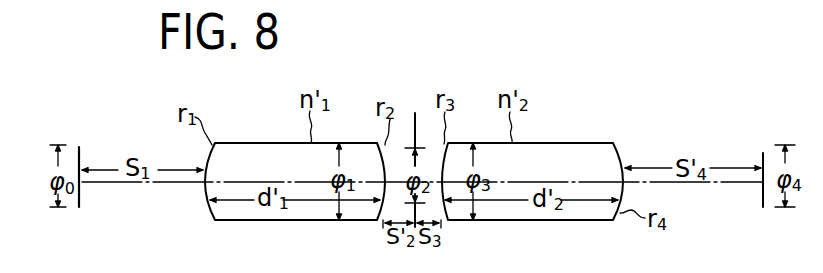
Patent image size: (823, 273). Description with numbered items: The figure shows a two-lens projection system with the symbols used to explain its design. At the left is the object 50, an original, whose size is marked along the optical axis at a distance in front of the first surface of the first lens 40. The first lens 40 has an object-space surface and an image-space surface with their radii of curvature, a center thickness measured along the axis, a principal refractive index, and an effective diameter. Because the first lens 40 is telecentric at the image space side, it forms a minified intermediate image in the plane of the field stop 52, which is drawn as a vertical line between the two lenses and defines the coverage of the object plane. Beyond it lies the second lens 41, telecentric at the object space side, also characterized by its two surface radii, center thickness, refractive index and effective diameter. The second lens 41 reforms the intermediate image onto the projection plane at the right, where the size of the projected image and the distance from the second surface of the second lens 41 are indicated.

The first lens 40 is at (256, 143).
The second lens 41 is at (578, 141).
The object 50 is at (81, 150).
The field stop 52 is at (415, 113).